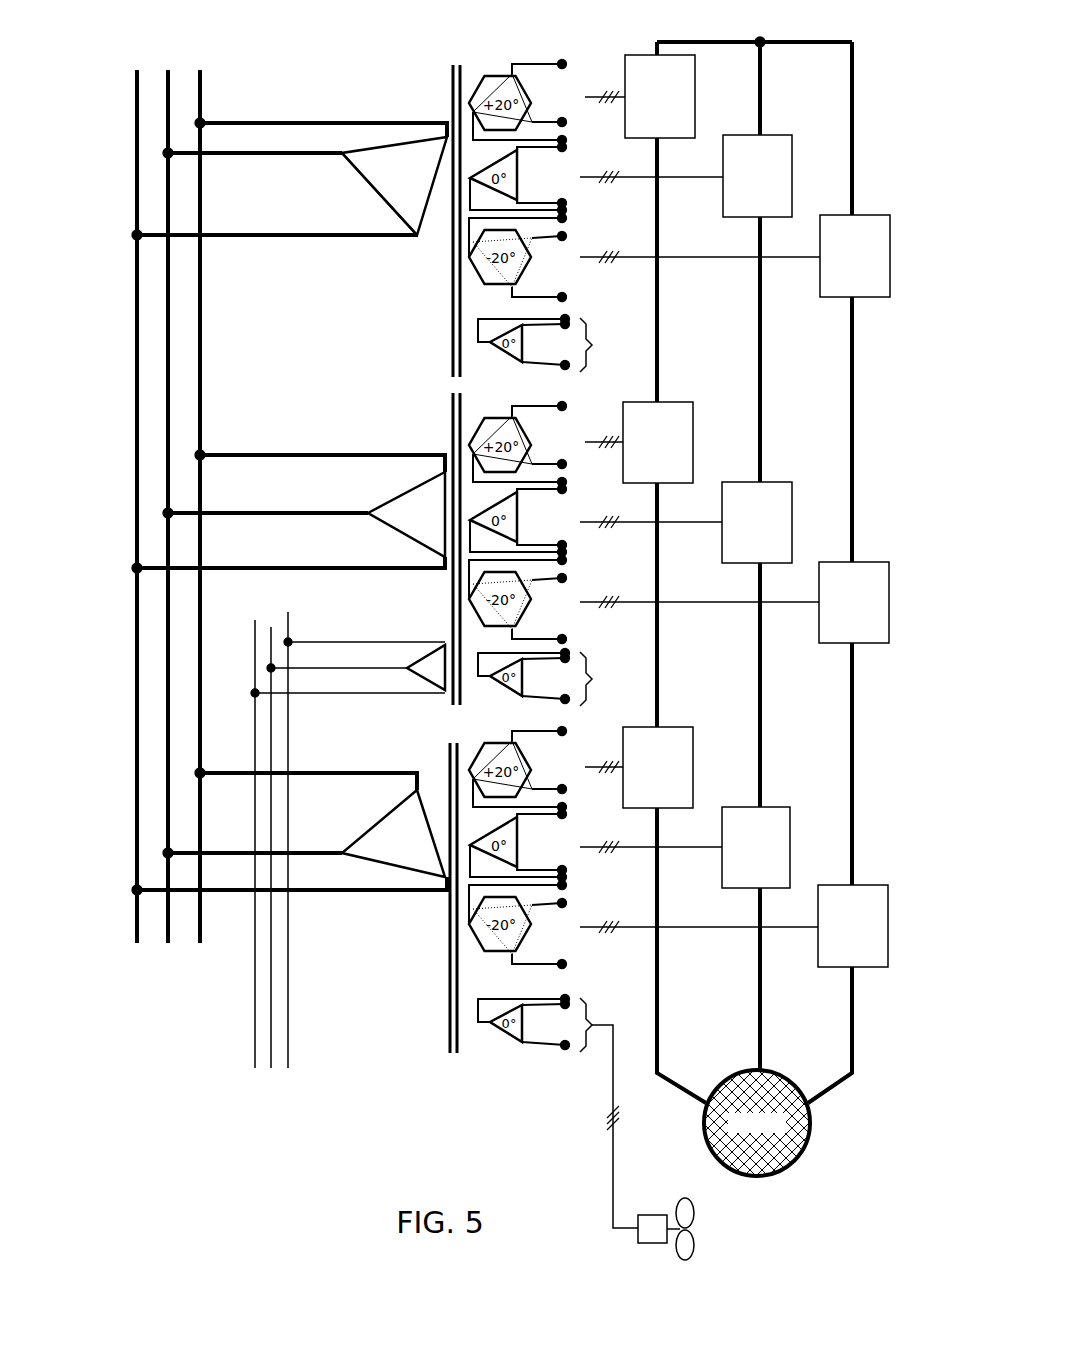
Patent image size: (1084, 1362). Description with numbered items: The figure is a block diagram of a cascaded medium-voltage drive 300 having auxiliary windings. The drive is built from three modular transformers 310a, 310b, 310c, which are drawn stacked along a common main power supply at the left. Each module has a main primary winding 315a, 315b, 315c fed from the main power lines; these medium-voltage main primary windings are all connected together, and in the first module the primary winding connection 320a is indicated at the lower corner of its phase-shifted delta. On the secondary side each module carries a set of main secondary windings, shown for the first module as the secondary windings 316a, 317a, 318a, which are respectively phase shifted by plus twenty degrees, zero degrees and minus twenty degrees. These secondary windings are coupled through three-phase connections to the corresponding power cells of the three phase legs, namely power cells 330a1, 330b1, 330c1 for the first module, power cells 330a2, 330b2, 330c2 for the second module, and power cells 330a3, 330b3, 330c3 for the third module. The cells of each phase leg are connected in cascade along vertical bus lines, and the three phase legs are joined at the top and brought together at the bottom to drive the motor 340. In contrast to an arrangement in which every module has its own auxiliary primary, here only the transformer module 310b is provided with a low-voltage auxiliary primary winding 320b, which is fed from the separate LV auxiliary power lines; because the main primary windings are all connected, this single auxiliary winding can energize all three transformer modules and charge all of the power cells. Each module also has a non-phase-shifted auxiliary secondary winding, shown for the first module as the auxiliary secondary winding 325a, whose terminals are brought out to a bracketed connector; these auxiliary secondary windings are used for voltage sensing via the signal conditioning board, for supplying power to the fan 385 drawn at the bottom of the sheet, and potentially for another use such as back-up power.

The cascaded drive 300 is at (121, 63).
The modular transformer 310a is at (296, 208).
The modular transformer 310b is at (296, 560).
The modular transformer 310c is at (294, 897).
The main primary winding 315a is at (383, 155).
The main primary winding 315b is at (392, 495).
The main primary winding 315c is at (357, 826).
The main secondary winding 316a is at (535, 93).
The main secondary winding 317a is at (520, 162).
The main secondary winding 318a is at (535, 245).
The auxiliary primary winding 320a is at (408, 245).
The LV auxiliary primary winding 320b is at (427, 693).
The auxiliary secondary winding 325a is at (592, 360).
The power cell 330a1 is at (645, 55).
The power cell 330b1 is at (773, 134).
The power cell 330c1 is at (868, 213).
The power cell 330a2 is at (665, 402).
The power cell 330b2 is at (770, 480).
The power cell 330c2 is at (868, 562).
The power cell 330a3 is at (672, 727).
The power cell 330b3 is at (770, 807).
The power cell 330c3 is at (866, 886).
The motor 340 is at (800, 1160).
The fan 385 is at (694, 1217).